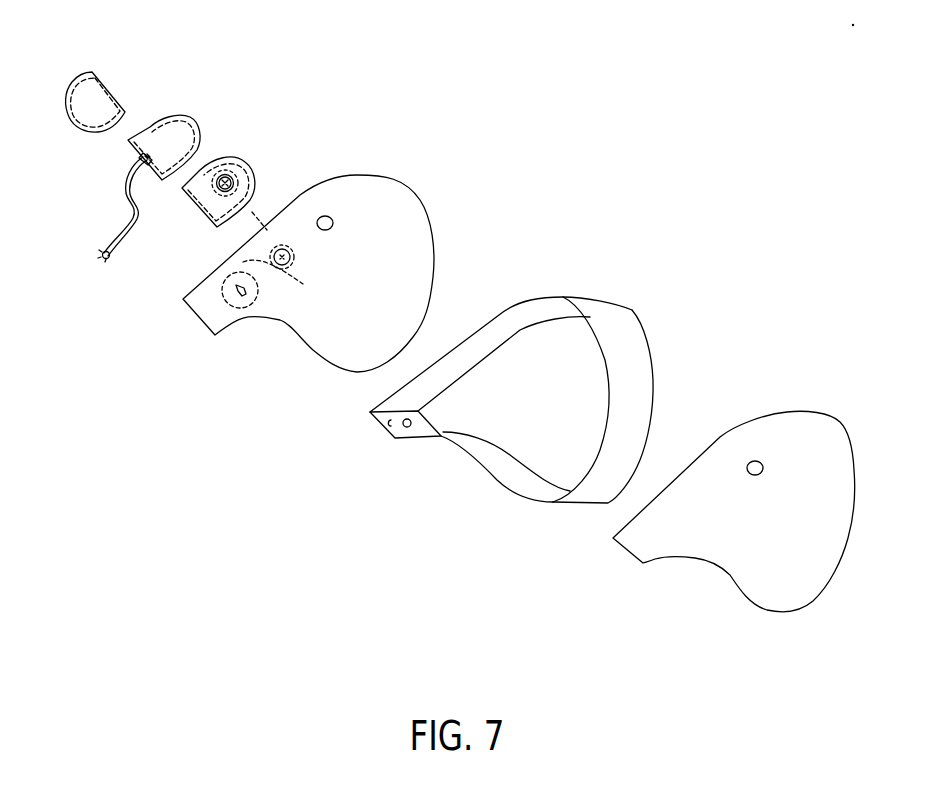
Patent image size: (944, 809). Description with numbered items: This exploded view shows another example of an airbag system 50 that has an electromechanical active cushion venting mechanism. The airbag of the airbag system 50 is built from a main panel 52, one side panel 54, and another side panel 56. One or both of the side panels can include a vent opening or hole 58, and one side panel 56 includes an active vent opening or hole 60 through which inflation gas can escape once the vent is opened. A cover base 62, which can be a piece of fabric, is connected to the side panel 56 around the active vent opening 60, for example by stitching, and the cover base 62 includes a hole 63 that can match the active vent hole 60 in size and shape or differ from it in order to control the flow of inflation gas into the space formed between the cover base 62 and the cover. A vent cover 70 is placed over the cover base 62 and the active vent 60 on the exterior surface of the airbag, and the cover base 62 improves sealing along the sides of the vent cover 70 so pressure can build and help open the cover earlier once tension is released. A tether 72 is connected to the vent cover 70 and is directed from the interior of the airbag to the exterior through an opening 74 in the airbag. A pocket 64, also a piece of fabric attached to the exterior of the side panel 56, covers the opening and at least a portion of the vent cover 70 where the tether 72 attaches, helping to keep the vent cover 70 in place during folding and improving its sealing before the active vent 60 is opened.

The airbag system 50 is at (694, 93).
The main panel 52 is at (618, 299).
The side panel 54 is at (797, 400).
The side panel 56 is at (418, 193).
The vent opening 58 is at (334, 230).
The active vent opening 60 is at (281, 278).
The cover base 62 is at (244, 157).
The hole 63 is at (215, 193).
The pocket 64 is at (106, 78).
The vent cover 70 is at (197, 118).
The tether 72 is at (92, 253).
The opening 74 is at (231, 293).